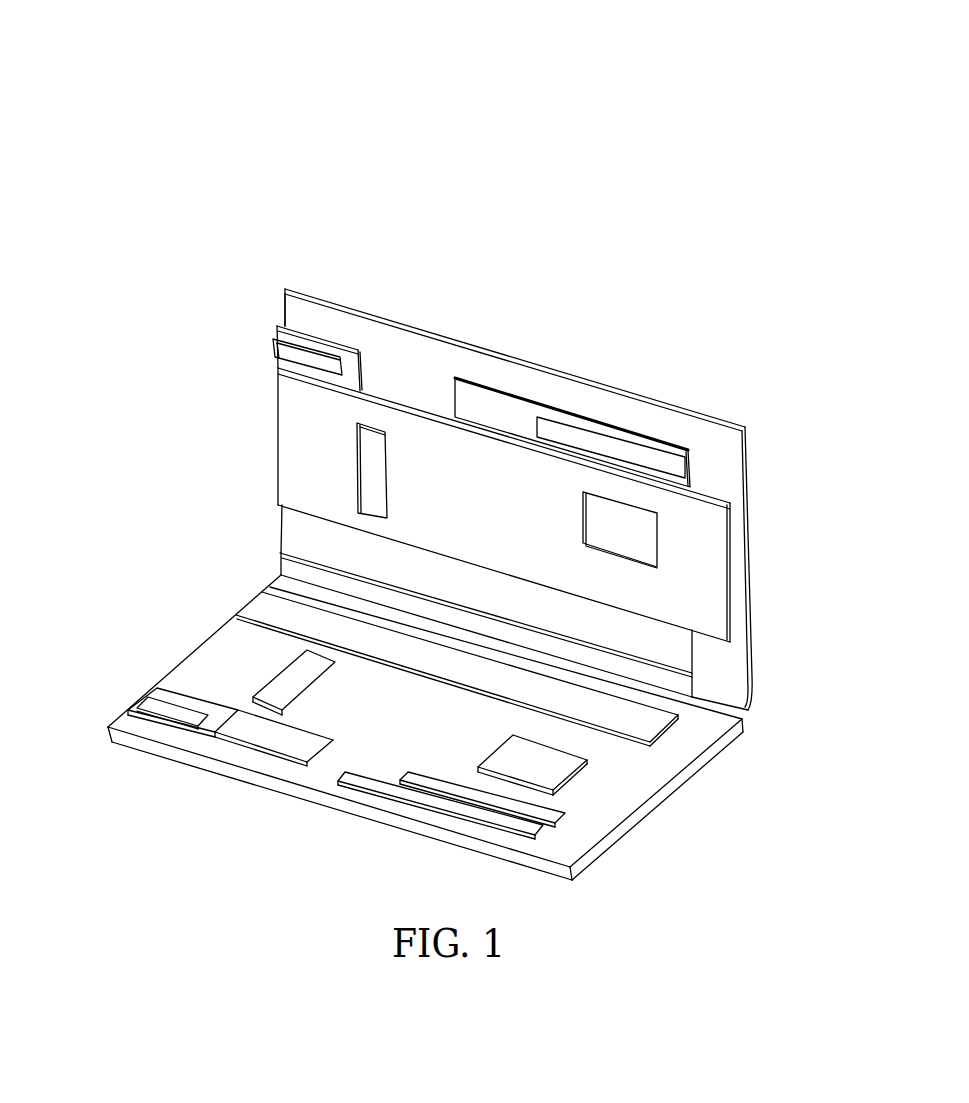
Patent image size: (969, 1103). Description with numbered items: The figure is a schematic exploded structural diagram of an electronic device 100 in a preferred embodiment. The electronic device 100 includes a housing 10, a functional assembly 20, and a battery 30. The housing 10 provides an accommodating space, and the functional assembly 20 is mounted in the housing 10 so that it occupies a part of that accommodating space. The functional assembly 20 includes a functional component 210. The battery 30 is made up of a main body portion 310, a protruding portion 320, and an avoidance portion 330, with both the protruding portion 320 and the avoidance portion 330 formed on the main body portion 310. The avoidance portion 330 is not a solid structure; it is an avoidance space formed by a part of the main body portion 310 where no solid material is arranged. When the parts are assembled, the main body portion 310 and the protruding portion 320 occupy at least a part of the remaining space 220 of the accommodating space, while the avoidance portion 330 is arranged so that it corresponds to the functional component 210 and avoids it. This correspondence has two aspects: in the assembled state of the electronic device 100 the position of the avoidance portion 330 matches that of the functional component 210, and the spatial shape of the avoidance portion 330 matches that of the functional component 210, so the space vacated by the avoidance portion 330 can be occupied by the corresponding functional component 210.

The electronic device 100 is at (463, 33).
The housing 10 is at (757, 424).
The functional assembly 20 is at (617, 856).
The battery 30 is at (268, 318).
The functional component 210 is at (633, 738).
The remaining space 220 is at (217, 668).
The main body portion 310 is at (693, 658).
The protruding portion 320 is at (275, 350).
The avoidance portion 330 is at (588, 522).